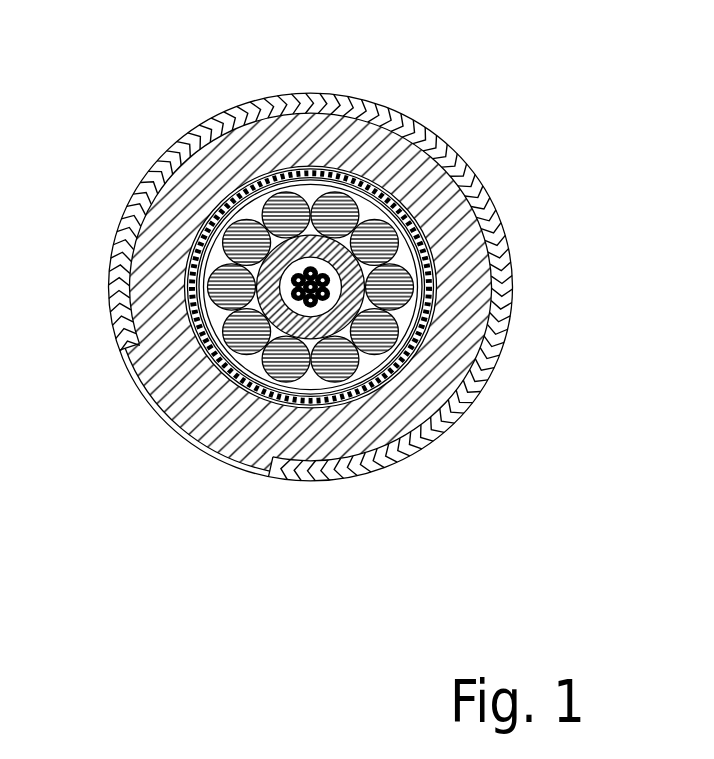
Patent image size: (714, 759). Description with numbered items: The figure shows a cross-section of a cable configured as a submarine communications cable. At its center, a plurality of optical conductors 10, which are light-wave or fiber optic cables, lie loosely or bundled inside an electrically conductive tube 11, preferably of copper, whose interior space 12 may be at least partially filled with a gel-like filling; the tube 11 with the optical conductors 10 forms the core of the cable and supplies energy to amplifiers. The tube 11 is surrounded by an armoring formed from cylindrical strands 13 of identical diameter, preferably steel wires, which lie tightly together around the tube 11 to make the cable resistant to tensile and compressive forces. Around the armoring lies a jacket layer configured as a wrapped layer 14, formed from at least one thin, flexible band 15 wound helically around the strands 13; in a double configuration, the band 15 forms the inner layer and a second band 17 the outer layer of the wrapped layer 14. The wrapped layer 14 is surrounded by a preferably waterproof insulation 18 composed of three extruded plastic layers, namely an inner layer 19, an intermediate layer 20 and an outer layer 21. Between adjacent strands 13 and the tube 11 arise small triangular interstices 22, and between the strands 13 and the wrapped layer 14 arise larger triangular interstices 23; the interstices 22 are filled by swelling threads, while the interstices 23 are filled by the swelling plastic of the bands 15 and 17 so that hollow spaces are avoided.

The optical conductors 10 is at (333, 232).
The electrically conductive tube 11 is at (312, 268).
The interior space 12 is at (425, 150).
The cylindrical strands 13 is at (422, 217).
The wrapped layer 14 is at (436, 272).
The band 15 is at (270, 476).
The second band 17 is at (311, 287).
The insulation 18 is at (172, 415).
The inner layer 19 is at (193, 328).
The intermediate layer 20 is at (147, 247).
The outer layer 21 is at (140, 180).
The interstices 22 is at (432, 312).
The interstices 23 is at (250, 177).